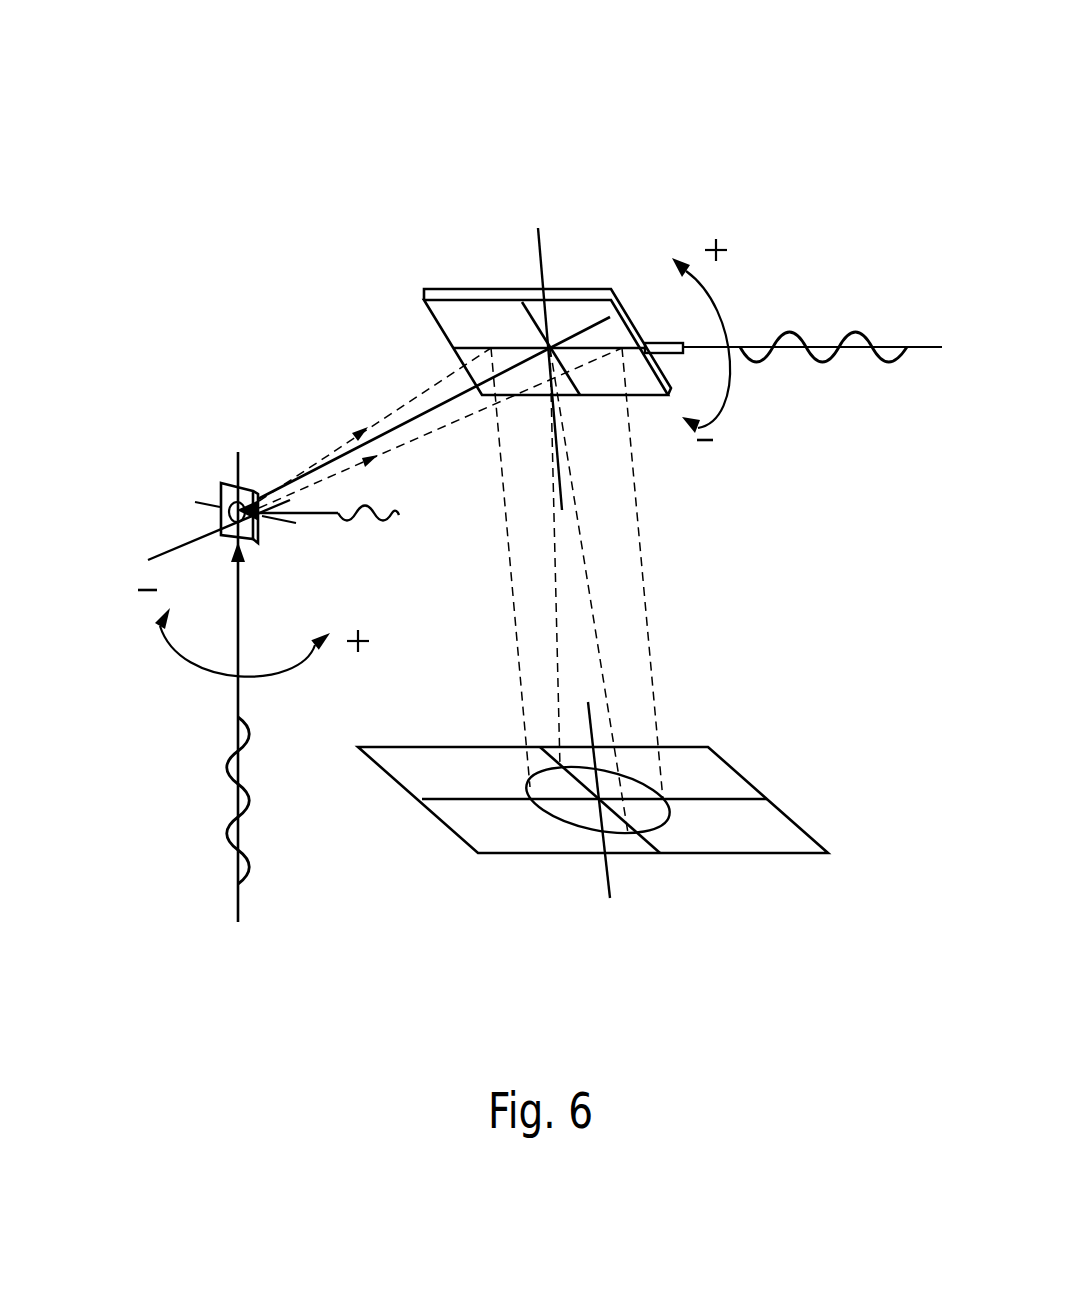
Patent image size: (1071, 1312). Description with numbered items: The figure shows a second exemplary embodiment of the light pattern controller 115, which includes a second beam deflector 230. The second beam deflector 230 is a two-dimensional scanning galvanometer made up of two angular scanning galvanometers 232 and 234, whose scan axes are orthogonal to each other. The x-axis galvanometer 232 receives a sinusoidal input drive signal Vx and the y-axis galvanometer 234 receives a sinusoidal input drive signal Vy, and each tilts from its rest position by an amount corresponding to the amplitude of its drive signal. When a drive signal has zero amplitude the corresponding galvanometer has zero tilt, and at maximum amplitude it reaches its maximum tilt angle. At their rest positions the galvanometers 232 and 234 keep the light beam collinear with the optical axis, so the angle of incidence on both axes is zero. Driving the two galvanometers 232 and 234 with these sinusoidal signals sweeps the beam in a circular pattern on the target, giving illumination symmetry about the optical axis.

The light pattern controller 115 is at (684, 70).
The second beam deflector 230 is at (204, 223).
The x-axis angular scanning galvanometer 232 is at (227, 492).
The y-axis angular scanning galvanometer 234 is at (455, 292).